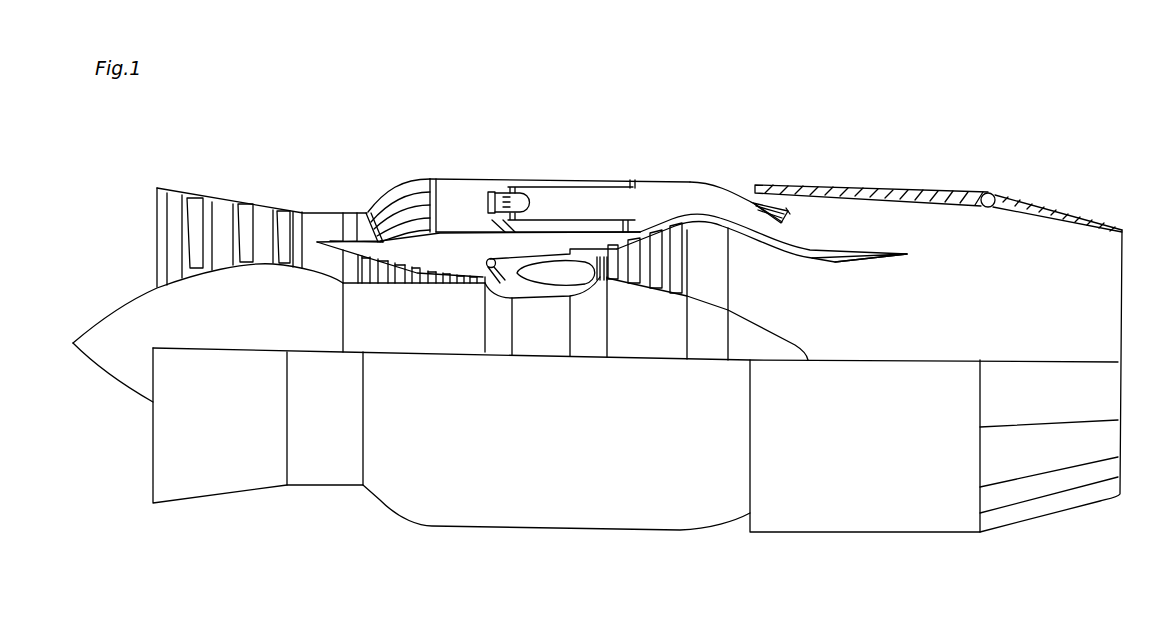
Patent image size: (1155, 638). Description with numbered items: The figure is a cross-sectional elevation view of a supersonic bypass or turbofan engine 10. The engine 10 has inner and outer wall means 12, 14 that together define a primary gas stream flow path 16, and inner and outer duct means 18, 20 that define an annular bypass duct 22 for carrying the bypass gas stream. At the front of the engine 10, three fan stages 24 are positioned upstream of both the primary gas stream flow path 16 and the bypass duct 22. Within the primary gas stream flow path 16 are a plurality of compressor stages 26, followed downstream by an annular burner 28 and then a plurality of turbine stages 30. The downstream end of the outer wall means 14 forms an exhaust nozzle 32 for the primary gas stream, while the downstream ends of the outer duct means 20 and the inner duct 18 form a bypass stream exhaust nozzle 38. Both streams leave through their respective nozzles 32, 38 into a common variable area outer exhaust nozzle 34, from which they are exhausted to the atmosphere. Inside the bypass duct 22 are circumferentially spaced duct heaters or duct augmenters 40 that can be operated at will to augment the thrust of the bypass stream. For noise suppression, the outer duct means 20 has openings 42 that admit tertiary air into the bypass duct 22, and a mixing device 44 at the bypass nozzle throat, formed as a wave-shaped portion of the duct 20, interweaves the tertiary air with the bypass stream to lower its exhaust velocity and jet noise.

The supersonic bypass or turbofan engine 10 is at (430, 156).
The inner wall means 12 is at (402, 286).
The outer wall means 14 is at (437, 272).
The primary gas stream flow path 16 is at (490, 290).
The inner duct means 18 is at (643, 227).
The outer duct means 20 is at (692, 183).
The annular bypass duct 22 is at (578, 200).
The fan stages 24 is at (235, 215).
The compressor stages 26 is at (372, 268).
The annular burner 28 is at (556, 280).
The turbine stages 30 is at (660, 290).
The exhaust nozzle 32 is at (868, 258).
The variable area outer exhaust nozzle 34 is at (1022, 206).
The bypass stream exhaust nozzle 38 is at (775, 228).
The duct heaters or duct augmenters 40 is at (500, 190).
The openings 42 is at (753, 190).
The mixing device 44 is at (790, 210).